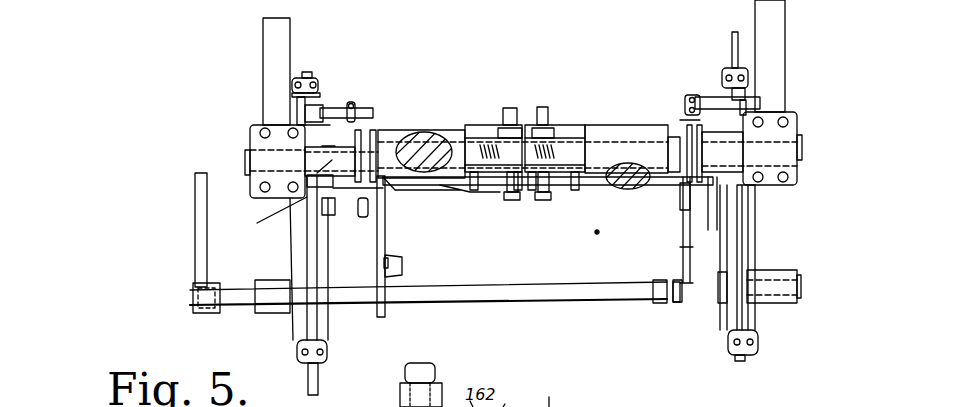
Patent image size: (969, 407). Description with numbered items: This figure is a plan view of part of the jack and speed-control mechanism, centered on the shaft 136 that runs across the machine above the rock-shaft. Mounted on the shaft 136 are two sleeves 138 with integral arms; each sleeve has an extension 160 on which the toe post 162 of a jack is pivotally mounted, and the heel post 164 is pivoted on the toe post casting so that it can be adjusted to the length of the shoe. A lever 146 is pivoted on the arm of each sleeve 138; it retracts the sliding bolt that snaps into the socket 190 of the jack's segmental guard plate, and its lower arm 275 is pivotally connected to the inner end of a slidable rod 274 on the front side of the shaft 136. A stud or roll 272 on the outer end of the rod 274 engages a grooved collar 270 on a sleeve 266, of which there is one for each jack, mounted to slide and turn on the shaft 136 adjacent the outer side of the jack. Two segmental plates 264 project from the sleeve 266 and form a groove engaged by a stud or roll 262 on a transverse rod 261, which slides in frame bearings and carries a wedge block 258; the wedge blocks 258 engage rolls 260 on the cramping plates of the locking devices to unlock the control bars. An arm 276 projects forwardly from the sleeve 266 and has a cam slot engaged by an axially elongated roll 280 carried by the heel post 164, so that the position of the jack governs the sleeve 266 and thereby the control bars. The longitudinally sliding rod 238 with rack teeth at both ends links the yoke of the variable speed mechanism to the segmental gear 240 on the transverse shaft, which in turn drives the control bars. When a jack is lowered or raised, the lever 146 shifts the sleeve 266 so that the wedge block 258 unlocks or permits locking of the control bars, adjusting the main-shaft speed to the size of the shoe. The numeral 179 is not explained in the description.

The shaft 136 is at (247, 160).
The sleeve 138 is at (479, 130).
The lever 146 is at (562, 393).
The extension 160 is at (452, 137).
The toe post 162 is at (455, 188).
The heel post 164 is at (403, 270).
The housing 179 is at (545, 112).
The socket 190 is at (518, 397).
The rod 238 is at (195, 218).
The segmental gear 240 is at (195, 300).
The wedge block 258 is at (325, 116).
The roll 260 is at (322, 100).
The transverse rod 261 is at (372, 112).
The stud or roll 262 is at (348, 128).
The segmental plate 264 is at (322, 146).
The sleeve 266 is at (755, 187).
The grooved collar 270 is at (352, 143).
The stud or roll 272 is at (385, 192).
The slidable rod 274 is at (583, 220).
The arm 275 is at (548, 260).
The arm 276 is at (380, 238).
The roll 280 is at (380, 264).